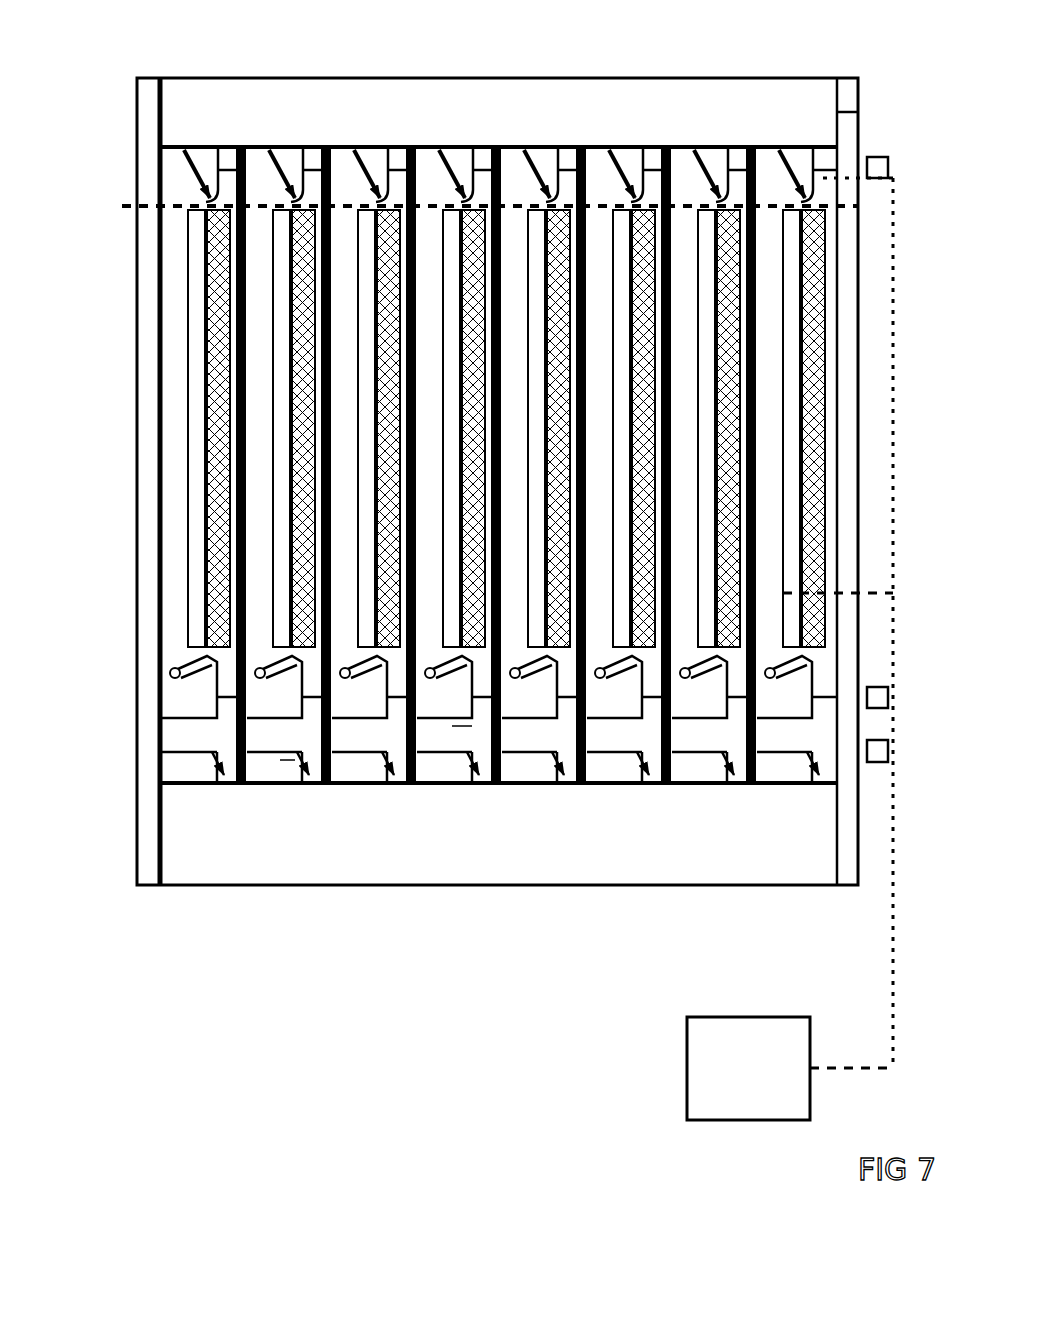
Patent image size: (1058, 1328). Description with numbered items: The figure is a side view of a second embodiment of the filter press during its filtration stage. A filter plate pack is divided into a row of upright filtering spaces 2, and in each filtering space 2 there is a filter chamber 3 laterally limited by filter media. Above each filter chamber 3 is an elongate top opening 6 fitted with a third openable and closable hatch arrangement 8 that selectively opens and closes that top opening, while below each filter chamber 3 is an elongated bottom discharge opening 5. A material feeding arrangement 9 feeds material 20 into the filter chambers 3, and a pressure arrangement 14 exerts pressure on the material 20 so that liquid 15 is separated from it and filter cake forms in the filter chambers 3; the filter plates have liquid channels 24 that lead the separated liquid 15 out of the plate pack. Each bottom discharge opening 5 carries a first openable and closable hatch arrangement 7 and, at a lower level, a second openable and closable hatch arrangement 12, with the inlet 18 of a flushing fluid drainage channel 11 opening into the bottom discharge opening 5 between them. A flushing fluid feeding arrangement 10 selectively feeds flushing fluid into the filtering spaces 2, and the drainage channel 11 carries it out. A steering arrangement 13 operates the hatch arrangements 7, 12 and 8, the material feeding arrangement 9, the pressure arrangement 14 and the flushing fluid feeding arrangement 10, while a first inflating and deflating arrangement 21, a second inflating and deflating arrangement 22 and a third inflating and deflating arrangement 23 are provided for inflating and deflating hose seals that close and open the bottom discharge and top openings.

The filtering space 2 is at (333, 146).
The filter chamber 3 is at (290, 260).
The elongated bottom discharge opening 5 is at (225, 773).
The elongate top opening 6 is at (403, 150).
The first openable and closable hatch arrangement 7 is at (218, 697).
The third openable and closable hatch arrangement 8 is at (568, 147).
The material feeding arrangement 9 is at (748, 107).
The flushing fluid feeding arrangement 10 is at (466, 204).
The flushing fluid drainage channel 11 is at (192, 730).
The second openable and closable hatch arrangement 12 is at (213, 758).
The steering arrangement 13 is at (731, 1085).
The pressure arrangement 14 is at (190, 553).
The liquid 15 is at (190, 661).
The inlet 18 is at (472, 720).
The material 20 is at (307, 467).
The first inflating and deflating arrangement 21 is at (878, 700).
The second inflating and deflating arrangement 22 is at (878, 165).
The third inflating and deflating arrangement 23 is at (878, 752).
The liquid channels 24 is at (172, 670).